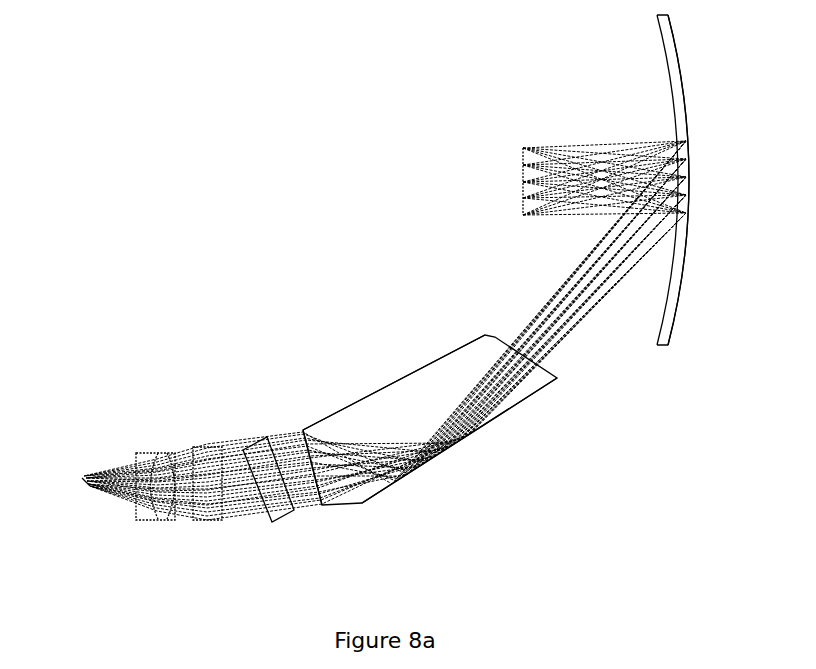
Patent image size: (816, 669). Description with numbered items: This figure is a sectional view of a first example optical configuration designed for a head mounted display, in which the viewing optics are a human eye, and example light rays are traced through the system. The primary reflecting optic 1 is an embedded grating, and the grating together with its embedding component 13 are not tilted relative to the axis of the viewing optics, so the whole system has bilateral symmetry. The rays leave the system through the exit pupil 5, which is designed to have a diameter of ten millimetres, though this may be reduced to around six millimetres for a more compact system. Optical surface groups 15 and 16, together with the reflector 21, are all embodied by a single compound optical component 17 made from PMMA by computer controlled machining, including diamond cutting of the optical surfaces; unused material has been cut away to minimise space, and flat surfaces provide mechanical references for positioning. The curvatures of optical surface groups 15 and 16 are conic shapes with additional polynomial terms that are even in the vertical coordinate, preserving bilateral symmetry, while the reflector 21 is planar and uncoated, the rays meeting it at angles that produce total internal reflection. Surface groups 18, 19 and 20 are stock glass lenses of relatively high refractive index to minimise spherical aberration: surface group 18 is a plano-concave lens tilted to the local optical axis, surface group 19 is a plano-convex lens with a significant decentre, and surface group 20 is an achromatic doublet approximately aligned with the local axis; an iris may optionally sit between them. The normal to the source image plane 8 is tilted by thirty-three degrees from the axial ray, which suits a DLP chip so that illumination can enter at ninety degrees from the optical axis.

The primary reflecting optic 1 is at (687, 240).
The exit pupil 5 is at (523, 150).
The source image plane 8 is at (80, 479).
The embedding component 13 is at (673, 76).
The optical surface group 15 is at (493, 333).
The optical surface group 16 is at (305, 445).
The compound optical component 17 is at (395, 397).
The surface group 18 is at (277, 512).
The surface group 19 is at (217, 520).
The surface group 20 is at (153, 517).
The reflector 21 is at (387, 487).